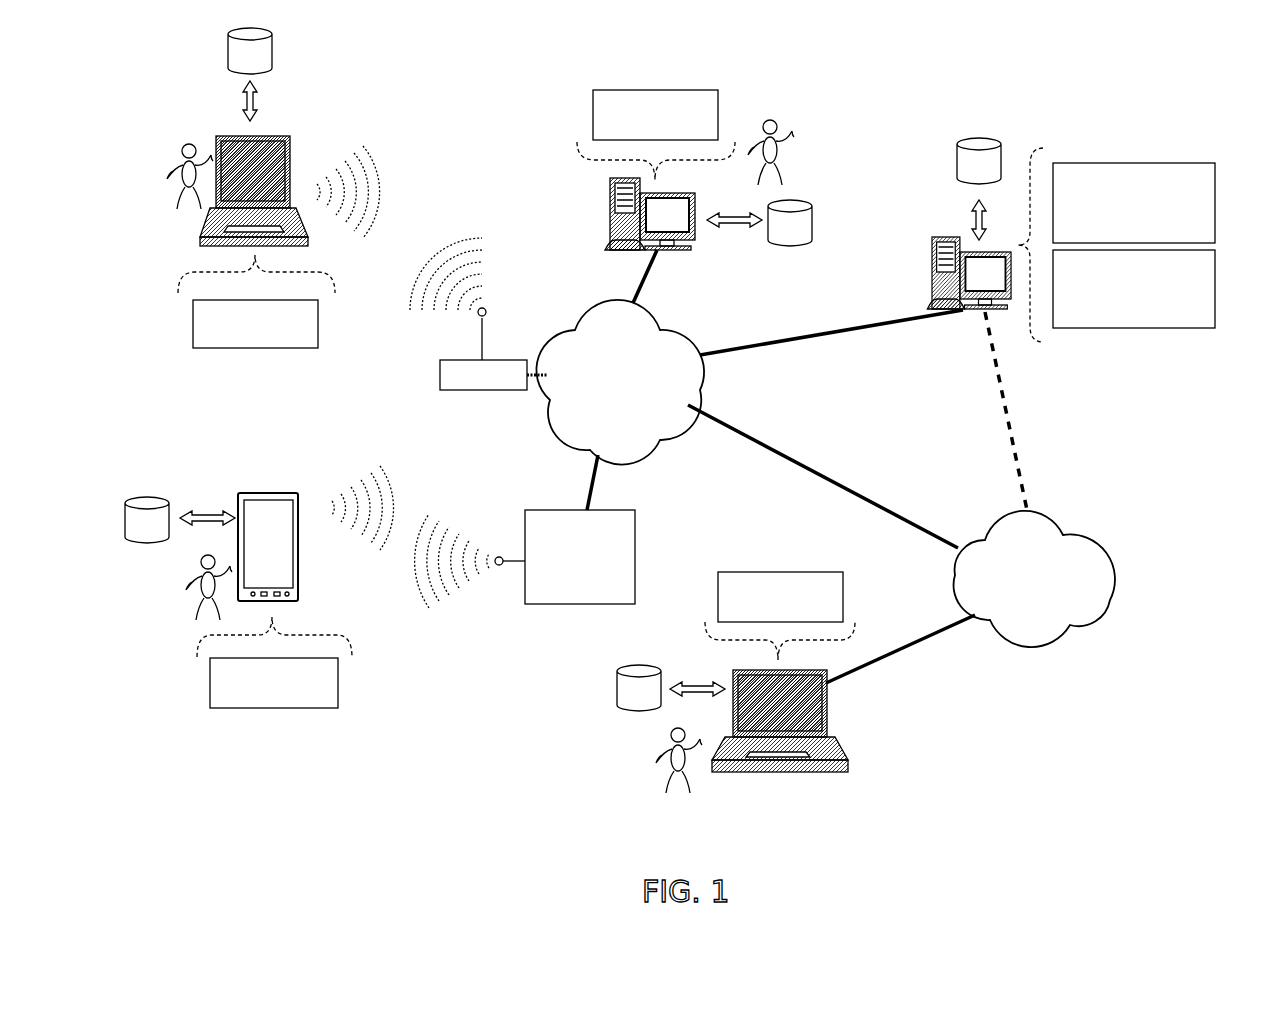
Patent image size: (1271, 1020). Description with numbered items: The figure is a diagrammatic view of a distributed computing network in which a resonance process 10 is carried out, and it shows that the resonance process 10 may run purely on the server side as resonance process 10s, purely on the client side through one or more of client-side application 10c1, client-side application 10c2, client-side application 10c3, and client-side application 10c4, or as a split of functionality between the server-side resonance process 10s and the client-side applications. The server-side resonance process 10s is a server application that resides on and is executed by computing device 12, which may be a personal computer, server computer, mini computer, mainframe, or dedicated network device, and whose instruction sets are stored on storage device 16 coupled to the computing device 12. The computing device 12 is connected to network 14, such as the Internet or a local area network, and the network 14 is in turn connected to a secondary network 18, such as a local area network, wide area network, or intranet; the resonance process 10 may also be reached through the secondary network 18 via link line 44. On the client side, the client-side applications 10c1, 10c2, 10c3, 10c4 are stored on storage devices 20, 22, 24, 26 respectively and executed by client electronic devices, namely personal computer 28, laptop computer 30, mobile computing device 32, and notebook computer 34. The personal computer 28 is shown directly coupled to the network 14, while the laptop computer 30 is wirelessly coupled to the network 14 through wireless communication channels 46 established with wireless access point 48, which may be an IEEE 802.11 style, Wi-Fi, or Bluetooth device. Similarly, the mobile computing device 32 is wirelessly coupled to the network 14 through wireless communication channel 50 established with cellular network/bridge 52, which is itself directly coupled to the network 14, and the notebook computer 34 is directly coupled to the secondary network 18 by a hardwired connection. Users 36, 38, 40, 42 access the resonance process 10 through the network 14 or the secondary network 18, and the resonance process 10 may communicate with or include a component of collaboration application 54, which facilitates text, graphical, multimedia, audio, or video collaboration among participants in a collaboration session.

The resonance process 10 is at (1076, 95).
The server-side resonance process 10s is at (1215, 205).
The client-side application 10c1 is at (718, 120).
The client-side application 10c2 is at (318, 325).
The client-side application 10c3 is at (338, 682).
The client-side application 10c4 is at (843, 598).
The computing device 12 is at (932, 252).
The network 14 is at (620, 382).
The storage device 16 is at (979, 161).
The secondary network 18 is at (1034, 579).
The storage device 20 is at (790, 223).
The storage device 22 is at (250, 51).
The storage device 24 is at (147, 520).
The storage device 26 is at (639, 688).
The personal computer 28 is at (695, 213).
The laptop computer 30 is at (290, 152).
The mobile computing device 32 is at (310, 545).
The notebook computer 34 is at (828, 713).
The user 36 is at (788, 133).
The user 38 is at (155, 163).
The user 40 is at (188, 572).
The user 42 is at (644, 752).
The link line 44 is at (975, 424).
The wireless communication channel 46 is at (428, 204).
The wireless access point 48 is at (433, 378).
The wireless communication channel 50 is at (418, 507).
The cellular network/bridge 52 is at (635, 525).
The collaboration application 54 is at (1215, 290).